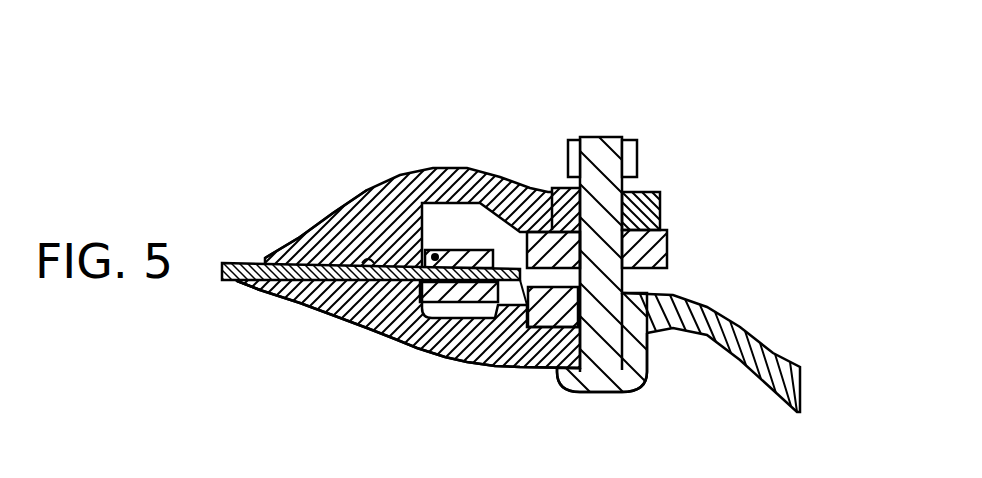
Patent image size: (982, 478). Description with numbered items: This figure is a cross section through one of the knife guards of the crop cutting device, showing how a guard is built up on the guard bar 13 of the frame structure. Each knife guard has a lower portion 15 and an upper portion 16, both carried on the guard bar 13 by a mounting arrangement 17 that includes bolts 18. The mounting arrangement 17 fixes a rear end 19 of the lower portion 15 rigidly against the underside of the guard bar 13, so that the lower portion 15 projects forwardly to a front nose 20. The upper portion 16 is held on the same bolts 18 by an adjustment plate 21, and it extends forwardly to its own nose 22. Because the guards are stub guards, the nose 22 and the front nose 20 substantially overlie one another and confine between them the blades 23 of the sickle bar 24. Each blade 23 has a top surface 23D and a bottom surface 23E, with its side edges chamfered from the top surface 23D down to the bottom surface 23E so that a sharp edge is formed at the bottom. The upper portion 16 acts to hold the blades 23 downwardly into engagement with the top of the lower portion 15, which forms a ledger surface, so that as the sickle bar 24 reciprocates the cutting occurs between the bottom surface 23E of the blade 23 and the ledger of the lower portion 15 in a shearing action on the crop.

The guard bar 13 is at (740, 330).
The lower portion 15 is at (467, 367).
The upper portion 16 is at (450, 178).
The mounting arrangement 17 is at (662, 165).
The bolts 18 is at (667, 241).
The rear end 19 is at (545, 370).
The front nose 20 is at (242, 286).
The adjustment plate 21 is at (552, 188).
The nose 22 is at (290, 243).
The blades 23 is at (293, 283).
The top surface 23D is at (367, 281).
The bottom surface 23E is at (318, 272).
The sickle bar 24 is at (437, 258).